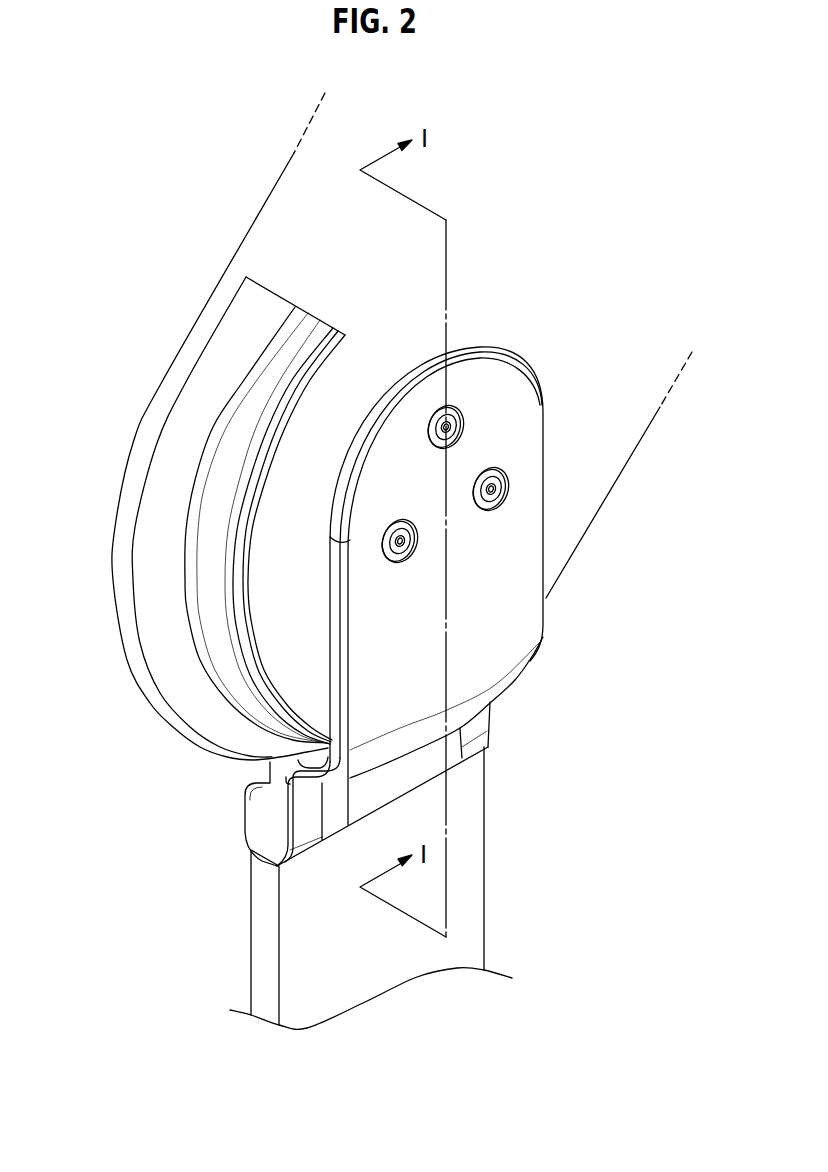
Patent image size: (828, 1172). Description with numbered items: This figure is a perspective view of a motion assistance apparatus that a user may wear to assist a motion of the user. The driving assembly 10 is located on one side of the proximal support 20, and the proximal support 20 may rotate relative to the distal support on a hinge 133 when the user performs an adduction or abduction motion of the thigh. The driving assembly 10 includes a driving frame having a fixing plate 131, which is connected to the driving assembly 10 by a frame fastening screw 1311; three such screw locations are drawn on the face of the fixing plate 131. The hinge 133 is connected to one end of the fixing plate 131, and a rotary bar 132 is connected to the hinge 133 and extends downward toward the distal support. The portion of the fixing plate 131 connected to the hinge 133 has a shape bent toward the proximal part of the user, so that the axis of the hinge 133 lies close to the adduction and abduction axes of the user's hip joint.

The driving assembly 10 is at (158, 745).
The proximal support 20 is at (272, 203).
The fixing plate 131 is at (497, 617).
The frame fastening screw 1311 is at (452, 431).
The rotary bar 132 is at (475, 857).
The hinge 133 is at (482, 730).